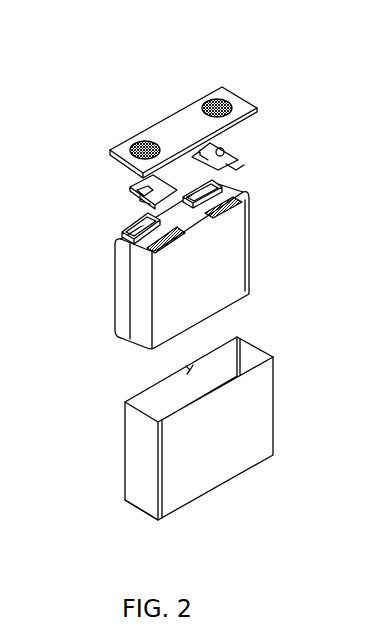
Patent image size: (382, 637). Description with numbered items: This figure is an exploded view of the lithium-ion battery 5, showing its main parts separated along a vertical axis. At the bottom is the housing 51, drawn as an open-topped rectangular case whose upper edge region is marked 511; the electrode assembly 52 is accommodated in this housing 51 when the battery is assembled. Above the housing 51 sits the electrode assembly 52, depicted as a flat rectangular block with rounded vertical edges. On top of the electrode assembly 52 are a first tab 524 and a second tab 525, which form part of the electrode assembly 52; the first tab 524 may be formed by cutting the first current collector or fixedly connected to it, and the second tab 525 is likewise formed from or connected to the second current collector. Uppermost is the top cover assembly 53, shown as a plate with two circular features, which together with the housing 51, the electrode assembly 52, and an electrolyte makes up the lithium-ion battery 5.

The lithium-ion battery 5 is at (117, 33).
The housing 51 is at (161, 428).
The opening of housing 511 is at (190, 370).
The electrode assembly 52 is at (179, 268).
The first tab 524 is at (140, 223).
The second tab 525 is at (237, 181).
The top cover assembly 53 is at (120, 130).